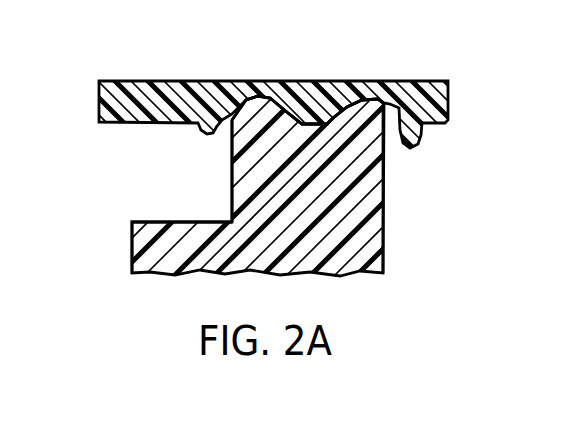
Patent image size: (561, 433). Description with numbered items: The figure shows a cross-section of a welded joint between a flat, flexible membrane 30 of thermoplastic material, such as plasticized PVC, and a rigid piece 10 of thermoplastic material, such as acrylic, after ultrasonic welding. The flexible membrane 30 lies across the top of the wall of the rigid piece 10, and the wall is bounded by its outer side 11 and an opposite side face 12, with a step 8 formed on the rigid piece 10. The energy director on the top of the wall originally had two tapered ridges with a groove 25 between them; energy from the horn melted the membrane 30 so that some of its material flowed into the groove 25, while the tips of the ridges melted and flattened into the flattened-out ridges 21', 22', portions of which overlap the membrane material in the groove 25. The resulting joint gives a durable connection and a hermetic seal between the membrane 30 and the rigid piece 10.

The flexible membrane 30 is at (133, 81).
The rigid piece 10 is at (363, 255).
The step 8 is at (152, 222).
The outer side 11 is at (232, 178).
The right side face 12 is at (383, 201).
The flattened-out ridge 21' is at (267, 119).
The flattened-out ridge 22' is at (355, 118).
The groove 25 is at (324, 110).